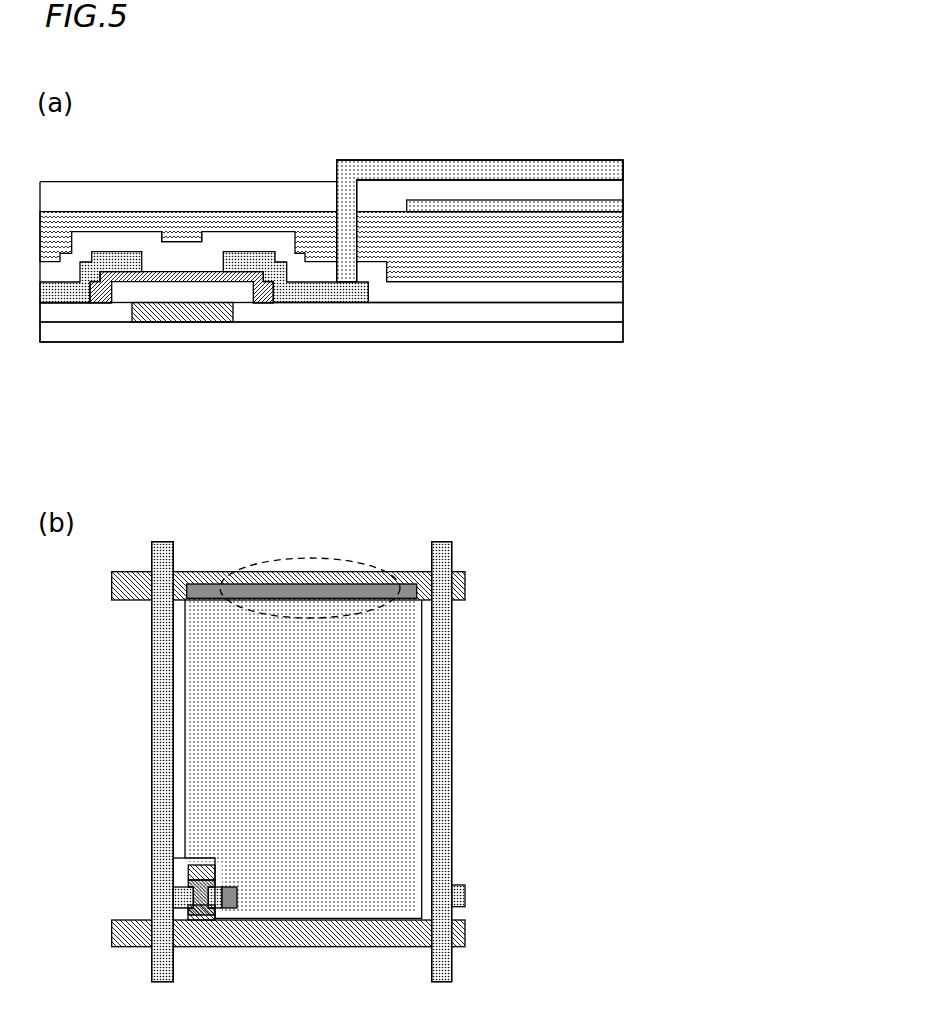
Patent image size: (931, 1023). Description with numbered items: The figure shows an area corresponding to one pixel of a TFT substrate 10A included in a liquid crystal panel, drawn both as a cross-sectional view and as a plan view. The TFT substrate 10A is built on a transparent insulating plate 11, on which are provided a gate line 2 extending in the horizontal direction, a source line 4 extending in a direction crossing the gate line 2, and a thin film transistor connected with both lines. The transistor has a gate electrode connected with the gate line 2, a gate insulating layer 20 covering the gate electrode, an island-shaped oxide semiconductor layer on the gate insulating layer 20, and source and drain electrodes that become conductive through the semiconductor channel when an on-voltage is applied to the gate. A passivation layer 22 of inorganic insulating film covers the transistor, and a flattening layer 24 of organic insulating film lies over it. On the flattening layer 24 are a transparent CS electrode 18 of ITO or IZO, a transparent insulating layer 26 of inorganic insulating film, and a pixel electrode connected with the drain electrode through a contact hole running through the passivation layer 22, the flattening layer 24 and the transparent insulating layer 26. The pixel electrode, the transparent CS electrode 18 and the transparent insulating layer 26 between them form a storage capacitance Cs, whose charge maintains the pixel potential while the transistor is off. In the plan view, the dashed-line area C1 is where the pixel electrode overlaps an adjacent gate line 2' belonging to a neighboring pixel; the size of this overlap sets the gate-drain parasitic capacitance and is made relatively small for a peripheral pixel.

The TFT substrate 10A is at (675, 145).
The transparent insulating plate 11 is at (623, 335).
The gate insulating layer 20 is at (623, 313).
The passivation layer 22 is at (623, 291).
The flattening layer 24 is at (623, 248).
The transparent CS electrode 18 is at (623, 206).
The transparent insulating layer 26 is at (623, 188).
The storage capacitance Cs is at (727, 158).
The gate line 2 is at (341, 926).
The adjacent gate line 2' is at (345, 577).
The source line 4 is at (160, 689).
The area C1 is at (337, 560).